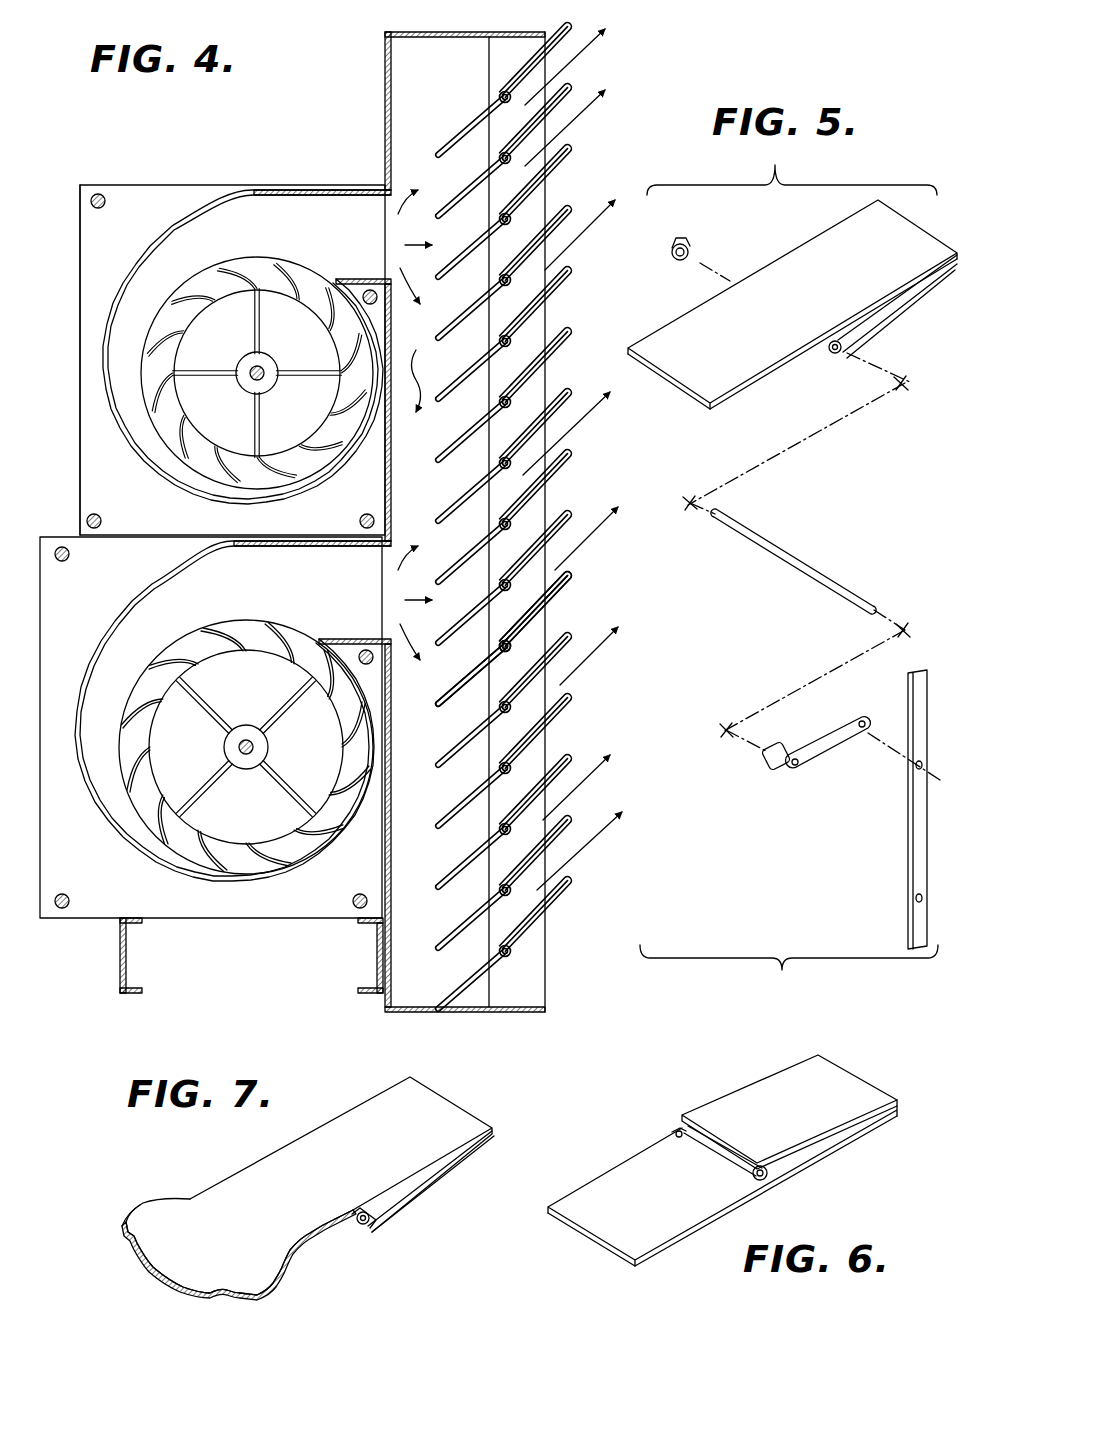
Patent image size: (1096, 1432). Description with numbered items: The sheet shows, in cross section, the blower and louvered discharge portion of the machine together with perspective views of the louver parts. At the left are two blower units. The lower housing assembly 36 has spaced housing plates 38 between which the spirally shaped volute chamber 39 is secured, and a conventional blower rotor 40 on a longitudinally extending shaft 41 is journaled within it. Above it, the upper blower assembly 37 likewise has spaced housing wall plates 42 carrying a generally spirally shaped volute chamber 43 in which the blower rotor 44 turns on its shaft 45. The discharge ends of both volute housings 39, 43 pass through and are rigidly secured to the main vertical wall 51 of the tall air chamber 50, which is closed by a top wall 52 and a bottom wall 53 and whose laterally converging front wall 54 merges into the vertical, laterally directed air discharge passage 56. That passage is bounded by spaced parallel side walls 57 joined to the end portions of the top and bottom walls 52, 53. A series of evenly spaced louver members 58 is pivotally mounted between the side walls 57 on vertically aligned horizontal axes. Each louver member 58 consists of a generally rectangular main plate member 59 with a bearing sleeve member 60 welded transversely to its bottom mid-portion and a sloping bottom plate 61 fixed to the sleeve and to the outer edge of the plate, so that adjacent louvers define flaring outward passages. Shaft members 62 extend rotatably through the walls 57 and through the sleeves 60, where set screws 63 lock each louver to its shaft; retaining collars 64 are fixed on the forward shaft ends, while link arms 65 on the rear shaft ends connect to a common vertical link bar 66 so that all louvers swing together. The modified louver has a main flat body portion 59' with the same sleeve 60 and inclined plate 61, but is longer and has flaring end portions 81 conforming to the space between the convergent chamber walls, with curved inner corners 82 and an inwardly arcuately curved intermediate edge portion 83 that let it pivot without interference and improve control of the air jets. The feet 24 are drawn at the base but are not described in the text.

In FIG. 4, the support feet 24 is at (120, 968).
In FIG. 4, the lower housing assembly 36 is at (60, 537).
In FIG. 4, the upper blower assembly 37 is at (105, 185).
In FIG. 4, the housing plates 38 is at (250, 907).
In FIG. 4, the volute chamber 39 is at (103, 620).
In FIG. 4, the blower rotor 40 is at (222, 663).
In FIG. 4, the shaft 41 is at (250, 745).
In FIG. 4, the housing wall plates 42 is at (92, 430).
In FIG. 4, the volute chamber 43 is at (138, 240).
In FIG. 4, the blower rotor 44 is at (280, 308).
In FIG. 4, the shaft 45 is at (262, 368).
In FIG. 4, the air chamber 50 is at (385, 32).
In FIG. 4, the main vertical wall 51 is at (385, 150).
In FIG. 4, the top wall 52 is at (455, 34).
In FIG. 4, the bottom wall 53 is at (448, 1012).
In FIG. 4, the front wall 54 is at (436, 750).
In FIG. 4, the air discharge passage 56 is at (565, 608).
In FIG. 4, the side walls 57 is at (540, 1002).
In FIG. 4, the louver members 58 is at (460, 626).
In FIG. 5, the louver members 58 is at (645, 333).
In FIG. 6, the louver members 58 is at (715, 1090).
In FIG. 5, the main plate member 59 is at (792, 304).
In FIG. 6, the main plate member 59 is at (722, 1183).
In FIG. 7, the main flat body portion 59' is at (341, 1146).
In FIG. 5, the bearing sleeve member 60 is at (825, 352).
In FIG. 6, the bearing sleeve member 60 is at (707, 1145).
In FIG. 7, the bearing sleeve member 60 is at (360, 1232).
In FIG. 5, the sloping bottom plate 61 is at (868, 340).
In FIG. 6, the sloping bottom plate 61 is at (772, 1097).
In FIG. 7, the sloping bottom plate 61 is at (408, 1200).
In FIG. 5, the shaft members 62 is at (772, 548).
In FIG. 6, the set screws 63 is at (675, 1130).
In FIG. 5, the retaining collars 64 is at (676, 243).
In FIG. 5, the link arms 65 is at (822, 770).
In FIG. 5, the link bar 66 is at (908, 690).
In FIG. 7, the end portions 81 is at (178, 1222).
In FIG. 7, the curved inner corners 82 is at (130, 1212).
In FIG. 7, the intermediate edge portion 83 is at (160, 1280).